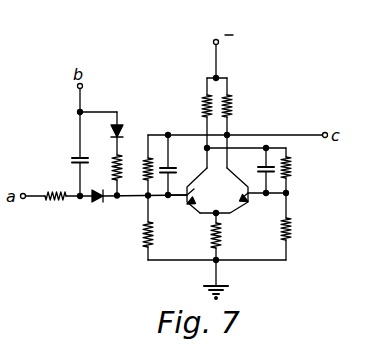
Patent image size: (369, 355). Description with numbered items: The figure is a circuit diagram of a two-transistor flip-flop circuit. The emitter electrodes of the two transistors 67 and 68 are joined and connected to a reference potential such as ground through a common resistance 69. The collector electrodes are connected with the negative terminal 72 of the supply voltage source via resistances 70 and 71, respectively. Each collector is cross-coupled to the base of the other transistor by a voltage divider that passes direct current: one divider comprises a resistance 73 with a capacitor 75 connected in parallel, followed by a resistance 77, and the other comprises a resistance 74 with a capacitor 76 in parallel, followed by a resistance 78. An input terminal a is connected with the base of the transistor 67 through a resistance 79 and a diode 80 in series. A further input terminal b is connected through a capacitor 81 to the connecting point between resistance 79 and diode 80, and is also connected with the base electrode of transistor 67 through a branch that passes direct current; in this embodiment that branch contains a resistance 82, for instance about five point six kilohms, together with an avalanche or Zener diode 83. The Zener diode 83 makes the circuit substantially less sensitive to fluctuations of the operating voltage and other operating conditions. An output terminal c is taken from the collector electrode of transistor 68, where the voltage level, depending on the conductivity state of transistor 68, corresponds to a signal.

The transistor 67 is at (195, 190).
The transistor 68 is at (224, 192).
The resistance 69 is at (220, 242).
The resistance 70 is at (203, 100).
The resistance 71 is at (233, 99).
The negative terminal 72 is at (214, 40).
The resistance 73 is at (146, 167).
The resistance 74 is at (291, 166).
The capacitor 75 is at (172, 167).
The capacitor 76 is at (262, 168).
The resistance 77 is at (155, 235).
The resistance 78 is at (292, 232).
The resistance 79 is at (60, 202).
The diode 80 is at (100, 203).
The capacitor 81 is at (75, 157).
The resistance 82 is at (113, 167).
The Zener diode 83 is at (123, 130).